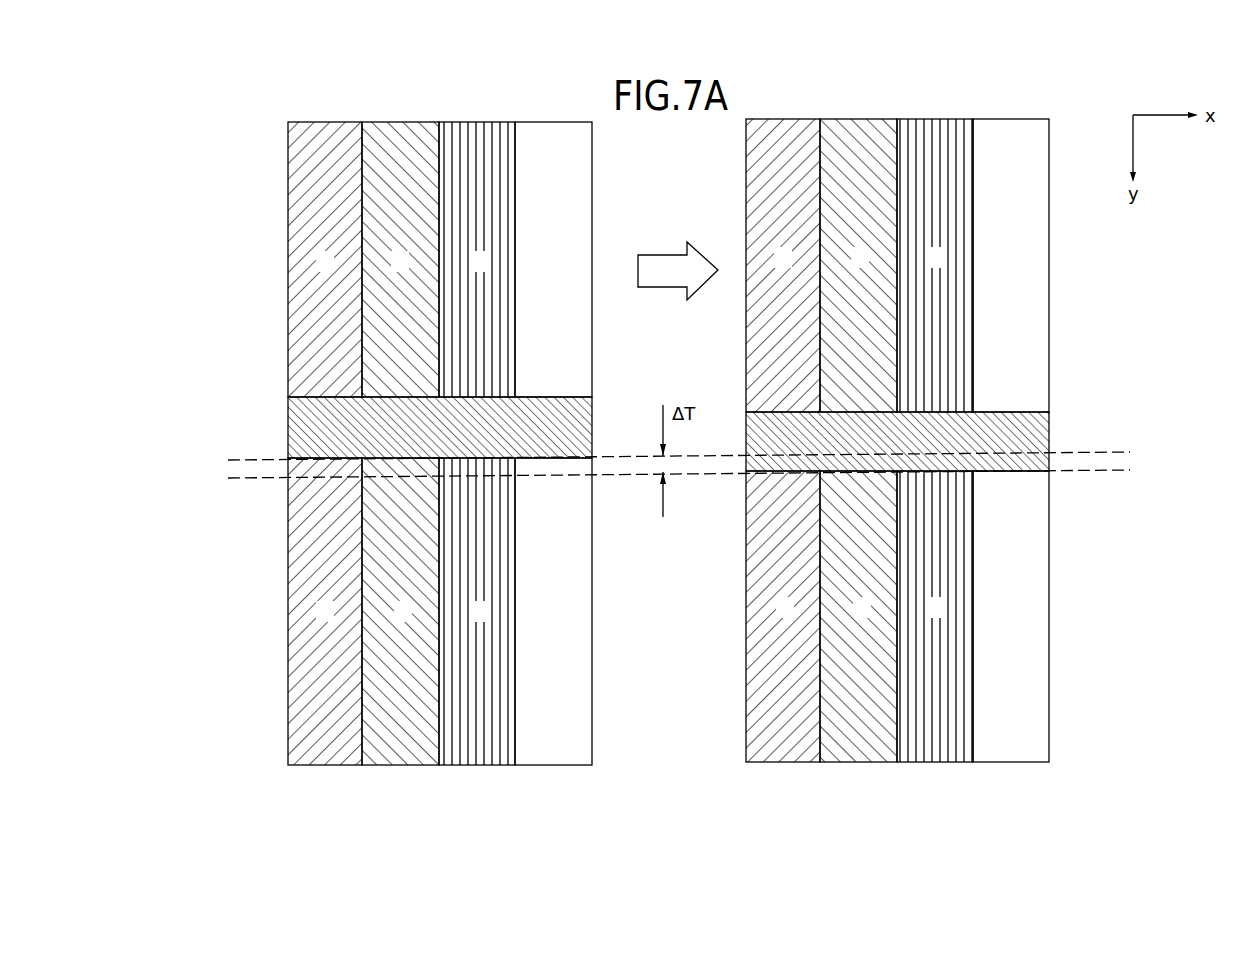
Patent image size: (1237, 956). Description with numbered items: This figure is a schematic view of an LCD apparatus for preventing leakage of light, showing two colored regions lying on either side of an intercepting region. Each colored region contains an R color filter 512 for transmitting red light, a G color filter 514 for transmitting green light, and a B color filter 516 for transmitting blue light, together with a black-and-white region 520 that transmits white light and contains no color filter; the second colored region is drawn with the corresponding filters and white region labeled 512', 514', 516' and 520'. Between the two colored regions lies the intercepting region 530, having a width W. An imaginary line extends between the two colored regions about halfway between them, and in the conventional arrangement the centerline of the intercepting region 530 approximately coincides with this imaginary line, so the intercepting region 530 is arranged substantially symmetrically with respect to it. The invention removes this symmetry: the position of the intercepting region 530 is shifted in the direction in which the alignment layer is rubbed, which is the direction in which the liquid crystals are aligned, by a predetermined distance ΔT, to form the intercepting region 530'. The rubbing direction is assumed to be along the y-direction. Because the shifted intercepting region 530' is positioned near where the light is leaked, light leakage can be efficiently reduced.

The R color filter 512 is at (554, 237).
The G color filter 514 is at (629, 237).
The B color filter 516 is at (706, 237).
The black-and-white region 520 is at (782, 237).
The intercepting region 530 is at (392, 427).
The shifted red color filter 512' is at (554, 643).
The shifted green color filter 514' is at (629, 643).
The shifted blue color filter 516' is at (706, 643).
The shifted white sub-pixel region 520' is at (782, 643).
The shifted intercepting region 530' is at (945, 436).